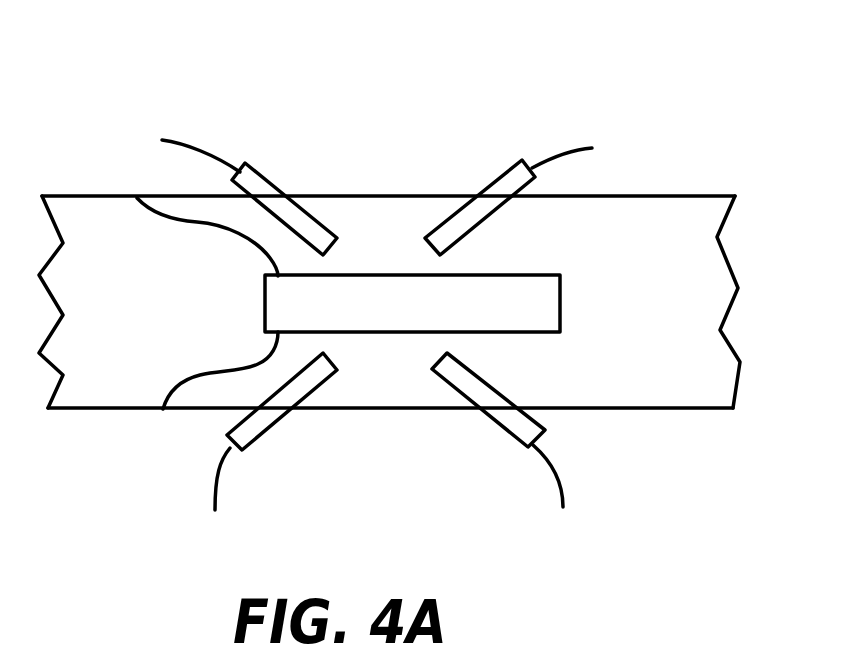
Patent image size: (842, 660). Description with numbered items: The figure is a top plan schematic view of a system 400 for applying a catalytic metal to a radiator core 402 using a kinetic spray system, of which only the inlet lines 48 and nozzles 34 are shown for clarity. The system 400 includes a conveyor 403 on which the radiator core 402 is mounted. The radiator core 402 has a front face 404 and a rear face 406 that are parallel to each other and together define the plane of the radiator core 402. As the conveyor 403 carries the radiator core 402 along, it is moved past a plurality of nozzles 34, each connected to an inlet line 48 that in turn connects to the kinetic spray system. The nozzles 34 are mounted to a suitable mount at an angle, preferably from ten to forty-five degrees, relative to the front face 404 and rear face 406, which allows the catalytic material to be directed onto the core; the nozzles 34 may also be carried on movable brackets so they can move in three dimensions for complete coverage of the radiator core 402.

The system 400 is at (395, 290).
The radiator core 402 is at (568, 258).
The conveyor 403 is at (640, 408).
The front face 404 is at (163, 409).
The rear face 406 is at (137, 198).
The nozzles 34 is at (250, 165).
The inlet lines 48 is at (190, 145).